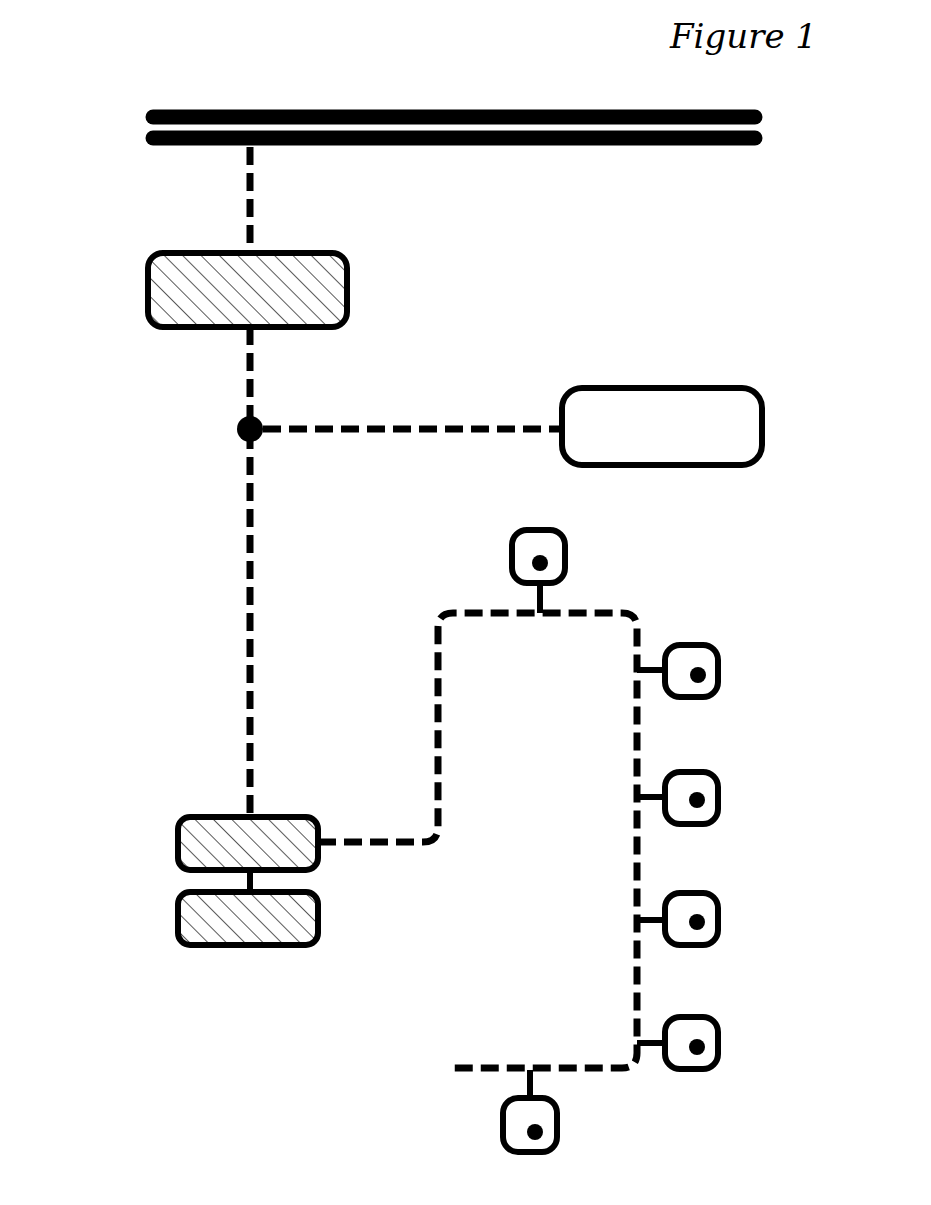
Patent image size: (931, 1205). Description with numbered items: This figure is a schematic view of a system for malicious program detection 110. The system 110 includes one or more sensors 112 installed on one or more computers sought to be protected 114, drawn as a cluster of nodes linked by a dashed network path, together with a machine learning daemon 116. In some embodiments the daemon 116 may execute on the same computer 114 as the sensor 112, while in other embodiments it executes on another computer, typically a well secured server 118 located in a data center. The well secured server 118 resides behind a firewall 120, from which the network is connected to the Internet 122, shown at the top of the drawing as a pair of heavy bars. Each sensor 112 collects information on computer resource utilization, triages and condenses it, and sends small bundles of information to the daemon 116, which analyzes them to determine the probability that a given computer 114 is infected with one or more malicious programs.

The system for malicious program detection 110 is at (198, 513).
The sensor 112 is at (547, 560).
The computer sought to be protected 114 is at (512, 555).
The machine learning daemon 116 is at (745, 388).
The well secured server 118 is at (182, 823).
The firewall 120 is at (337, 255).
The Internet 122 is at (700, 147).